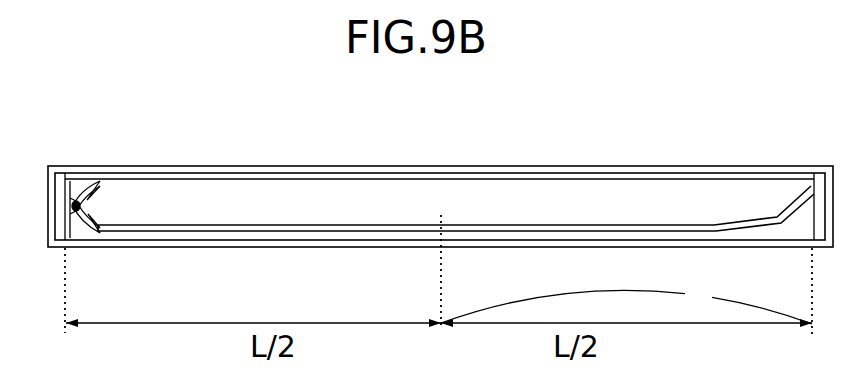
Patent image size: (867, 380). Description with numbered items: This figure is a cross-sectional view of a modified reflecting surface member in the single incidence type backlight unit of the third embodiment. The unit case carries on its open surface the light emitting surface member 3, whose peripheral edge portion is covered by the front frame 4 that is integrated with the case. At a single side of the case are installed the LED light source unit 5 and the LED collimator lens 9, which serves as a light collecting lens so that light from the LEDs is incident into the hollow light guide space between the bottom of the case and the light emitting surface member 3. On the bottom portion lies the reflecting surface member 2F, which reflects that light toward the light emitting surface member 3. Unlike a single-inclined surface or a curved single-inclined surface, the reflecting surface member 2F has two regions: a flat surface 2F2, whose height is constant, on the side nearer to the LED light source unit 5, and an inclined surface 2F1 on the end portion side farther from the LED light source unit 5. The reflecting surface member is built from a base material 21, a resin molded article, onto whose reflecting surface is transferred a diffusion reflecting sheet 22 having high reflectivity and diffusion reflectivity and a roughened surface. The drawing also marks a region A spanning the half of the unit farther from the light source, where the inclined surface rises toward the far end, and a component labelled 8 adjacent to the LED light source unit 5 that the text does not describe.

The front frame 4 is at (78, 166).
The light emitting surface member 3 is at (162, 173).
The LED collimator lens 9 is at (105, 173).
The LED light source unit 5 is at (72, 207).
The lamp holder 8 is at (79, 247).
The reflecting surface member 2F is at (456, 169).
The inclined surface 2F1 is at (729, 229).
The flat surface 2F2 is at (264, 225).
The diffusion reflecting sheet 22 is at (608, 225).
The base material 21 is at (772, 232).
The region A is at (745, 235).